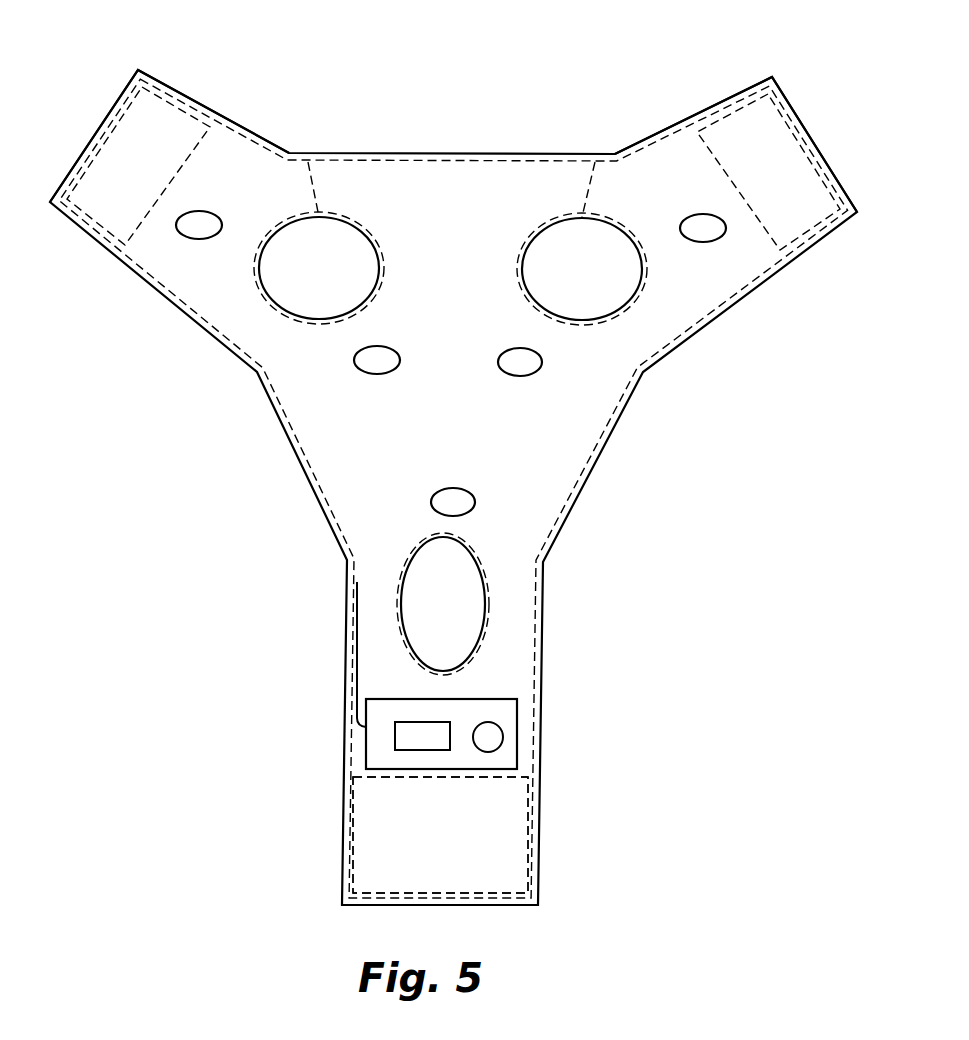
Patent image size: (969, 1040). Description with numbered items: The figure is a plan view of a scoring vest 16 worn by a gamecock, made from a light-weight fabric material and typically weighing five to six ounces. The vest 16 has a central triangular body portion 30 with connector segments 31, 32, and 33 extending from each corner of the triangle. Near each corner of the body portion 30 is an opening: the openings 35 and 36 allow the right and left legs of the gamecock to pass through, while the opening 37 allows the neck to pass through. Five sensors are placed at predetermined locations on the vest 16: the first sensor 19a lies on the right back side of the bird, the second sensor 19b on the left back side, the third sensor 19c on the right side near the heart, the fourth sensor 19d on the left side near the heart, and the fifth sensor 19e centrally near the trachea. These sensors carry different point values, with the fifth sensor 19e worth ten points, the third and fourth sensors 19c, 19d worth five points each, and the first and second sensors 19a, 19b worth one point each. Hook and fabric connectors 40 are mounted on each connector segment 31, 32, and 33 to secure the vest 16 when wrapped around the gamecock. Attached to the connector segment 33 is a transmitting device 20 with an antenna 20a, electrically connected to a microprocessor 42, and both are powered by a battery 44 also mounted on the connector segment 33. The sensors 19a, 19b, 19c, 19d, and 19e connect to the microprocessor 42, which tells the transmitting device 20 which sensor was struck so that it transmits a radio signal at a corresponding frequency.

The vest 16 is at (552, 566).
The central triangular body portion 30 is at (349, 457).
The connector segment 31 is at (232, 140).
The connector segment 32 is at (673, 145).
The hook and fabric connectors 40 is at (155, 103).
The opening 35 is at (340, 228).
The opening 36 is at (565, 228).
The opening 37 is at (418, 573).
The first sensor 19a is at (192, 230).
The second sensor 19b is at (710, 233).
The third sensor 19c is at (353, 358).
The fourth sensor 19d is at (542, 362).
The fifth sensor 19e is at (475, 500).
The transmitting device 20 is at (356, 744).
The antenna 20a is at (355, 637).
The microprocessor 42 is at (395, 723).
The battery 44 is at (492, 733).
The connector segment 33 is at (513, 803).